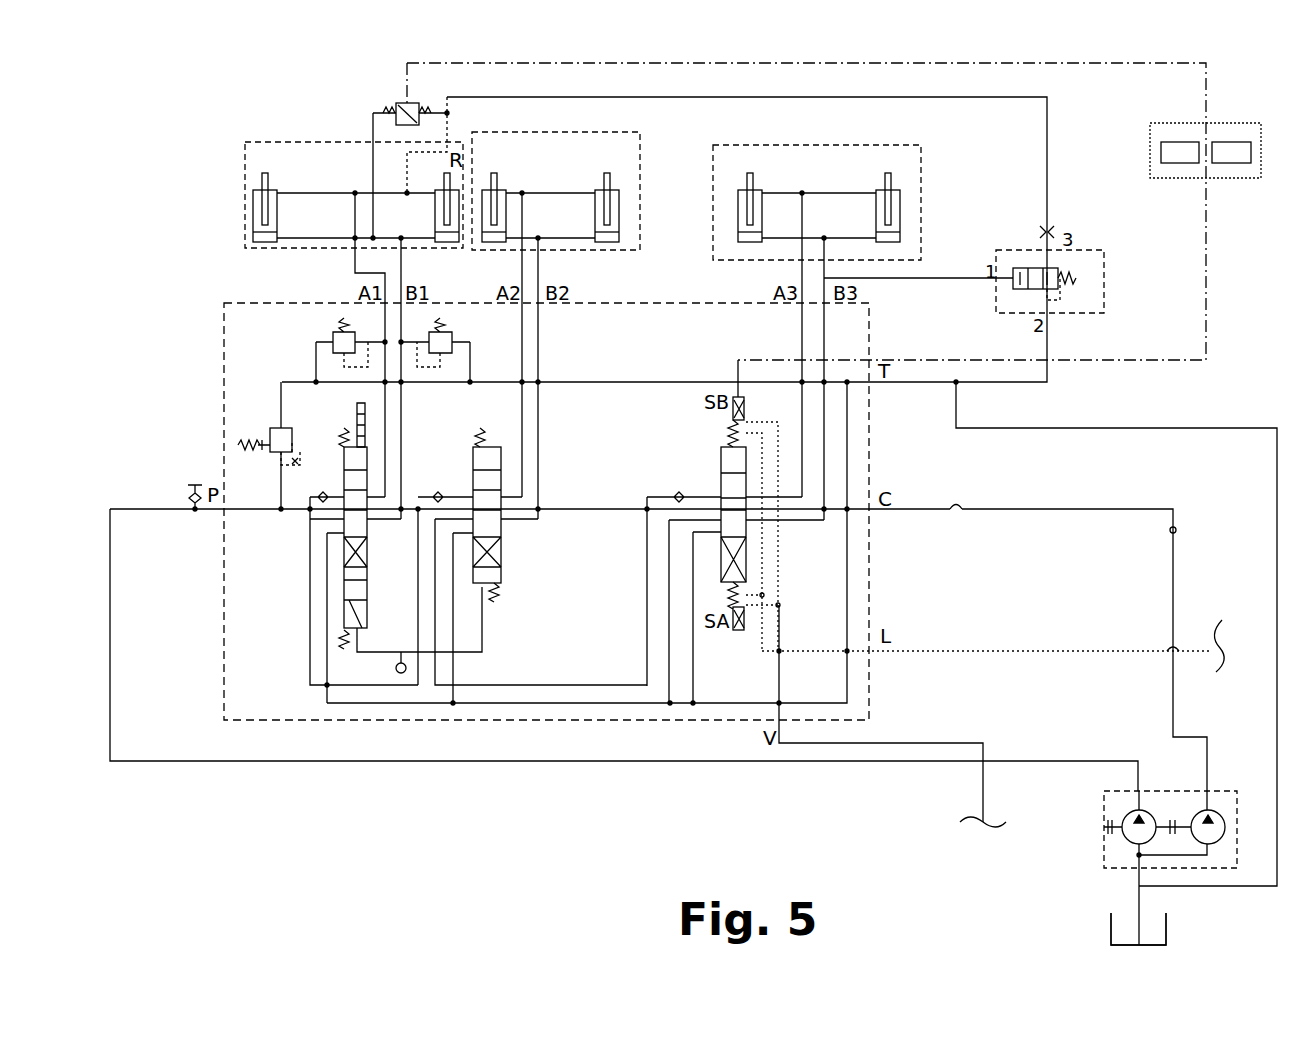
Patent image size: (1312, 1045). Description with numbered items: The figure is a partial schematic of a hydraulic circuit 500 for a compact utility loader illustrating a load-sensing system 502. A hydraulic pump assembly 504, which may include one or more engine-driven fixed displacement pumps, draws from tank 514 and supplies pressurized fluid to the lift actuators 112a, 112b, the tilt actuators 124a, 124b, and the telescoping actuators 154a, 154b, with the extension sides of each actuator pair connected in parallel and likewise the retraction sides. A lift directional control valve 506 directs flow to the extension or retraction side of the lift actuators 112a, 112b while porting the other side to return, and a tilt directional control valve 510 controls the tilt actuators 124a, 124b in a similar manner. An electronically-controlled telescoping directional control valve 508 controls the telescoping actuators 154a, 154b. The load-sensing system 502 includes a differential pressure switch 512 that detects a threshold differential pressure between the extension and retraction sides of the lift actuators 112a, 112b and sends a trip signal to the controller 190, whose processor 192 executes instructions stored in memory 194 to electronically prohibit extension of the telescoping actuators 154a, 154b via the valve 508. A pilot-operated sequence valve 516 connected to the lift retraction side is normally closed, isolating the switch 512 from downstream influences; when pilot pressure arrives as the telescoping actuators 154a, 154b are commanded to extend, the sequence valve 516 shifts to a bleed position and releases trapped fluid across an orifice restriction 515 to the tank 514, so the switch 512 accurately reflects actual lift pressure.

The lift actuator 112a is at (253, 193).
The lift actuator 112b is at (435, 217).
The tilt actuator 124a is at (500, 190).
The tilt actuator 124b is at (618, 190).
The telescoping actuator 154a is at (738, 193).
The telescoping actuator 154b is at (900, 193).
The controller 190 is at (1183, 127).
The processor 192 is at (1180, 142).
The memory 194 is at (1232, 163).
The hydraulic circuit 500 is at (1246, 296).
The load-sensing system 502 is at (1062, 100).
The hydraulic pump assembly 504 is at (1217, 791).
The lift directional control valve 506 is at (344, 447).
The telescoping directional control valve 508 is at (721, 447).
The tilt directional control valve 510 is at (501, 447).
The differential pressure switch 512 is at (393, 103).
The tank 514 is at (1125, 918).
The orifice restriction 515 is at (1050, 228).
The pilot-operated sequence valve 516 is at (1065, 270).